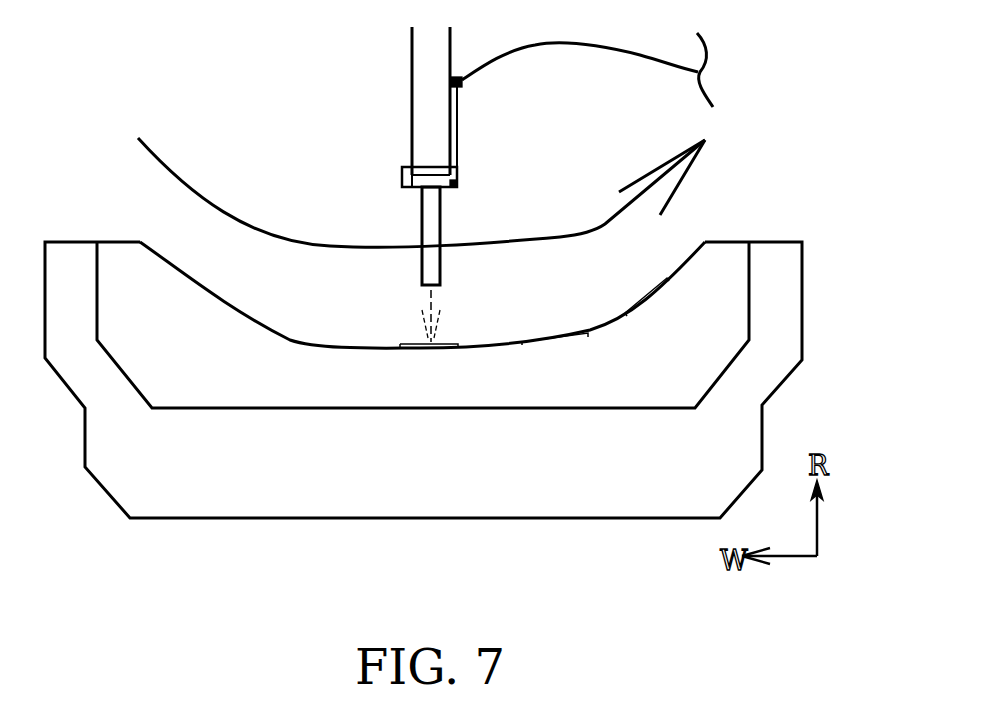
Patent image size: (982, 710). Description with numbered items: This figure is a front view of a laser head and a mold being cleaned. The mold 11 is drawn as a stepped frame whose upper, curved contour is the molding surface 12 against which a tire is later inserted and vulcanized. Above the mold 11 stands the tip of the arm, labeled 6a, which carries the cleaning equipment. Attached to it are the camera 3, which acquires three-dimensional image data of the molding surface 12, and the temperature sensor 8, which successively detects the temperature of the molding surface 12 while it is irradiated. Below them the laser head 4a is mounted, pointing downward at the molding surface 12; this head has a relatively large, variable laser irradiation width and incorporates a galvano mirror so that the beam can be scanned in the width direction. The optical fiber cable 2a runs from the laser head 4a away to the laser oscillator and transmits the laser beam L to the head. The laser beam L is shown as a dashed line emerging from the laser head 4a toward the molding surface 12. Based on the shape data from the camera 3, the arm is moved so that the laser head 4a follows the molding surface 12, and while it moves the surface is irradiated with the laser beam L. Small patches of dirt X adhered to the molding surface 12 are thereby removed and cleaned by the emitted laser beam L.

The mold 11 is at (121, 241).
The molding surface 12 is at (290, 344).
The tool body 6a is at (417, 90).
The camera 3 is at (402, 178).
The temperature sensor 8 is at (458, 184).
The laser head 4a is at (437, 228).
The optical fiber cable 2a is at (523, 50).
The laser beam L is at (417, 298).
The dirt X is at (455, 340).